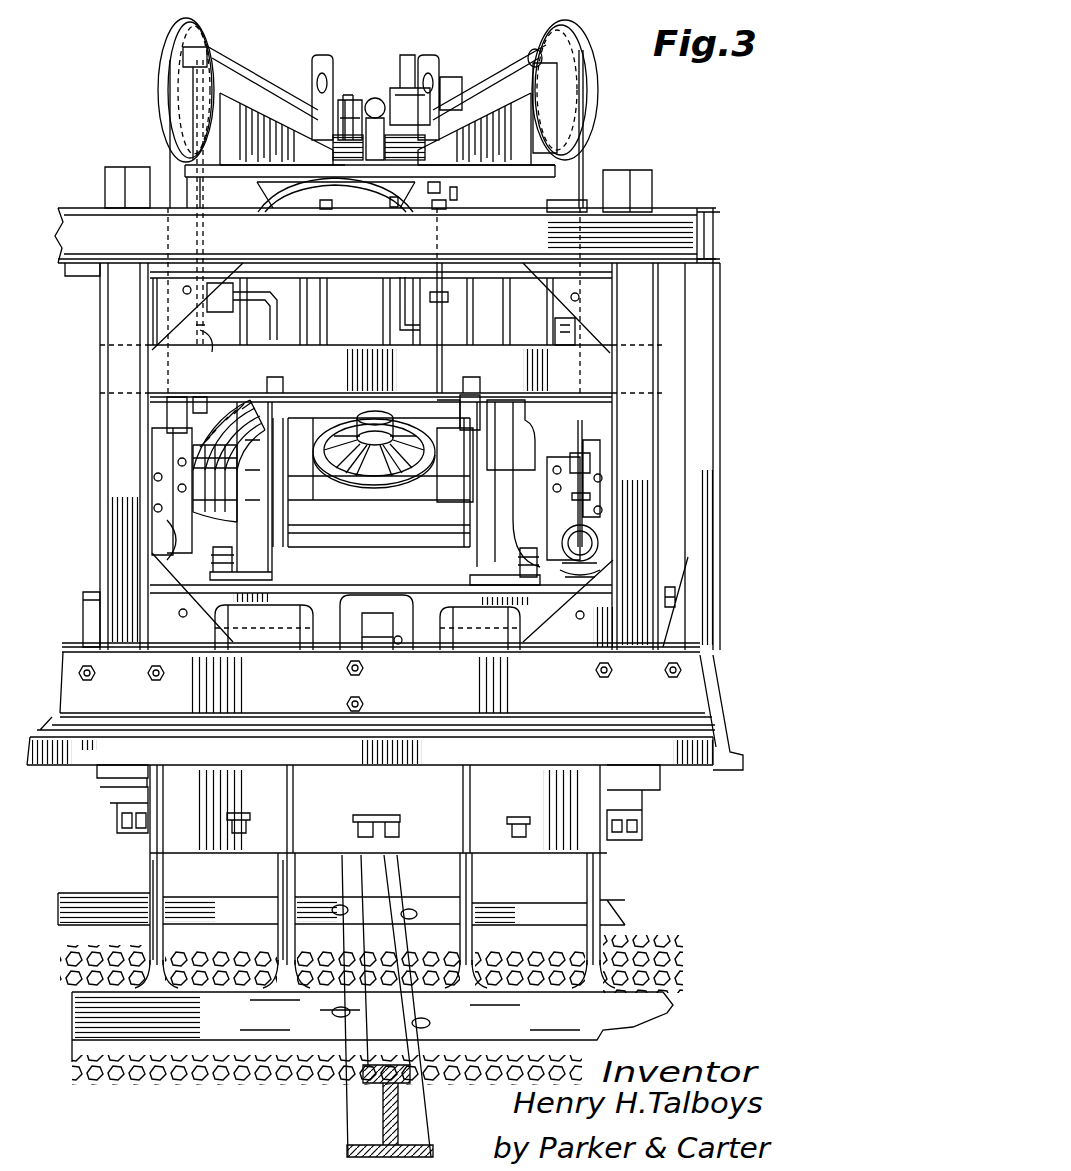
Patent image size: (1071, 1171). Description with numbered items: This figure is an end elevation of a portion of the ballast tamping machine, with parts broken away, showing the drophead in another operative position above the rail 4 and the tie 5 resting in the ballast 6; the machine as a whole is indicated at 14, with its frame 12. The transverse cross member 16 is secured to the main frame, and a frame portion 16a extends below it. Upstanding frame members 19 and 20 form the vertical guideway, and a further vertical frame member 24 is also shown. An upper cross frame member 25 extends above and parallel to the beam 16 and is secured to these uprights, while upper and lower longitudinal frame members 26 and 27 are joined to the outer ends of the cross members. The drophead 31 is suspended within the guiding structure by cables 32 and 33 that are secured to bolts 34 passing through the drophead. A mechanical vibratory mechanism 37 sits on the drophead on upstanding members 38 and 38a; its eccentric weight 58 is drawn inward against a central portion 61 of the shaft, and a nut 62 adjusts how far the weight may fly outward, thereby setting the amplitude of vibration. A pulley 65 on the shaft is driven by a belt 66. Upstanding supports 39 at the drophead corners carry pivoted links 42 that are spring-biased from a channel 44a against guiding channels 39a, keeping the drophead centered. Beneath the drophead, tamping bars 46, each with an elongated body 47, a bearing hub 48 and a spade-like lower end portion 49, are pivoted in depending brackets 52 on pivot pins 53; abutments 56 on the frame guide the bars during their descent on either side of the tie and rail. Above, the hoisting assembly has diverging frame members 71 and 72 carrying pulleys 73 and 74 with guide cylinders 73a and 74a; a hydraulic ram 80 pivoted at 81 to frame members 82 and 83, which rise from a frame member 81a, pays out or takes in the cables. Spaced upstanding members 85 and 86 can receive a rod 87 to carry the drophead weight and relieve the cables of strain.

The rail 4 is at (345, 1095).
The tie 5 is at (614, 917).
The ballast 6 is at (78, 965).
The frame arm 12 is at (256, 98).
The machine 14 is at (722, 404).
The cross member 16 is at (78, 686).
The frame portion 16a is at (528, 785).
The upstanding frame member 19 is at (638, 312).
The upstanding frame member 20 is at (116, 298).
The vertical frame member 24 is at (722, 368).
The upper cross frame member 25 is at (58, 238).
The upper longitudinal frame member 26 is at (712, 241).
The lower longitudinal frame member 27 is at (718, 700).
The drophead 31 is at (93, 592).
The cable 32 is at (583, 152).
The cable 33 is at (170, 150).
The bolt 34 is at (580, 545).
The mechanical vibratory mechanism 37 is at (499, 420).
The upstanding member 38 is at (480, 562).
The upstanding member 38a is at (265, 565).
The upstanding support 39 is at (186, 533).
The guiding channel 39a is at (128, 190).
The link 42 is at (563, 337).
The channel 44a is at (346, 368).
The tamping bar 46 is at (140, 858).
The elongated body 47 is at (150, 884).
The bearing hub 48 is at (292, 633).
The lower end portion 49 is at (290, 988).
The depending bracket 52 is at (348, 617).
The pivot pin 53 is at (399, 645).
The tamper bar abutment 56 is at (116, 818).
The weight 58 is at (375, 510).
The central portion 61 is at (443, 436).
The nut 62 is at (360, 427).
The pulley 65 is at (195, 470).
The belt 66 is at (196, 478).
The frame member 71 is at (536, 52).
The frame member 72 is at (277, 110).
The pulley 73 is at (600, 79).
The guide cylinder 73a is at (492, 66).
The pulley 74 is at (190, 32).
The guide cylinder 74a is at (257, 58).
The hydraulic ram 80 is at (393, 182).
The pivot 81 is at (360, 108).
The frame member 81a is at (382, 168).
The frame member 82 is at (408, 140).
The frame member 83 is at (357, 100).
The upstanding member 85 is at (432, 298).
The upstanding member 86 is at (310, 294).
The rod 87 is at (212, 352).